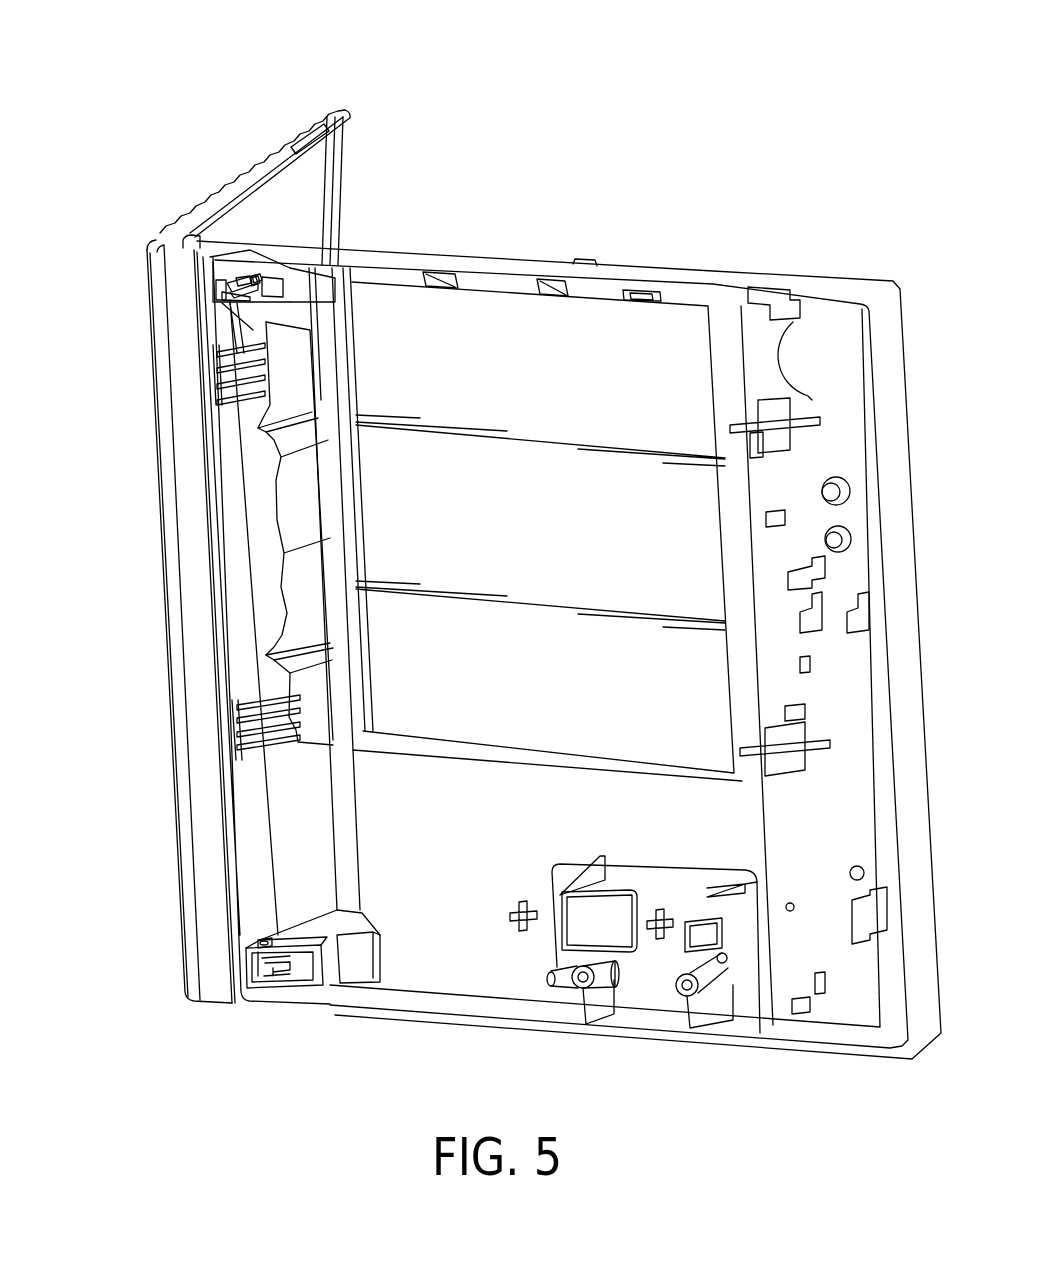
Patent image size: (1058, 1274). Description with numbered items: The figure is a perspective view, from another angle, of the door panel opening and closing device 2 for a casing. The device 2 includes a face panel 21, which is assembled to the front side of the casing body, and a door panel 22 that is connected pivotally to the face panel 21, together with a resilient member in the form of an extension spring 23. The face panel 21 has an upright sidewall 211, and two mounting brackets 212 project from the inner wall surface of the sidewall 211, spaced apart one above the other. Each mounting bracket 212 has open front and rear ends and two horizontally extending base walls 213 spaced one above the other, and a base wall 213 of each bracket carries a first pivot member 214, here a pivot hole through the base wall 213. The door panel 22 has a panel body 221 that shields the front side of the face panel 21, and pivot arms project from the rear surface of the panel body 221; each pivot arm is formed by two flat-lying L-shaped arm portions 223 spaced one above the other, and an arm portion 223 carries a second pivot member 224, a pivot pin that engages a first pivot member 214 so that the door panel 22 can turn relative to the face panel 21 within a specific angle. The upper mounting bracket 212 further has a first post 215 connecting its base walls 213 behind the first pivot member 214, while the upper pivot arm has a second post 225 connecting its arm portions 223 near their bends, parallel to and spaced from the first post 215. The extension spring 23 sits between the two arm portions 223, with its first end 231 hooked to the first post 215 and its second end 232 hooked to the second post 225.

The door panel opening and closing device 2 is at (620, 164).
The face panel 21 is at (665, 243).
The upright sidewall 211 is at (230, 325).
The mounting bracket 212 is at (300, 276).
The base wall 213 is at (276, 263).
The first pivot member 214 is at (262, 945).
The first post 215 is at (228, 292).
The door panel 22 is at (274, 125).
The panel body 221 is at (300, 178).
The arm portion 223 is at (243, 282).
The second pivot member 224 is at (265, 943).
The second post 225 is at (258, 282).
The extension spring 23 is at (235, 285).
The first end 231 is at (245, 295).
The second end 232 is at (258, 280).